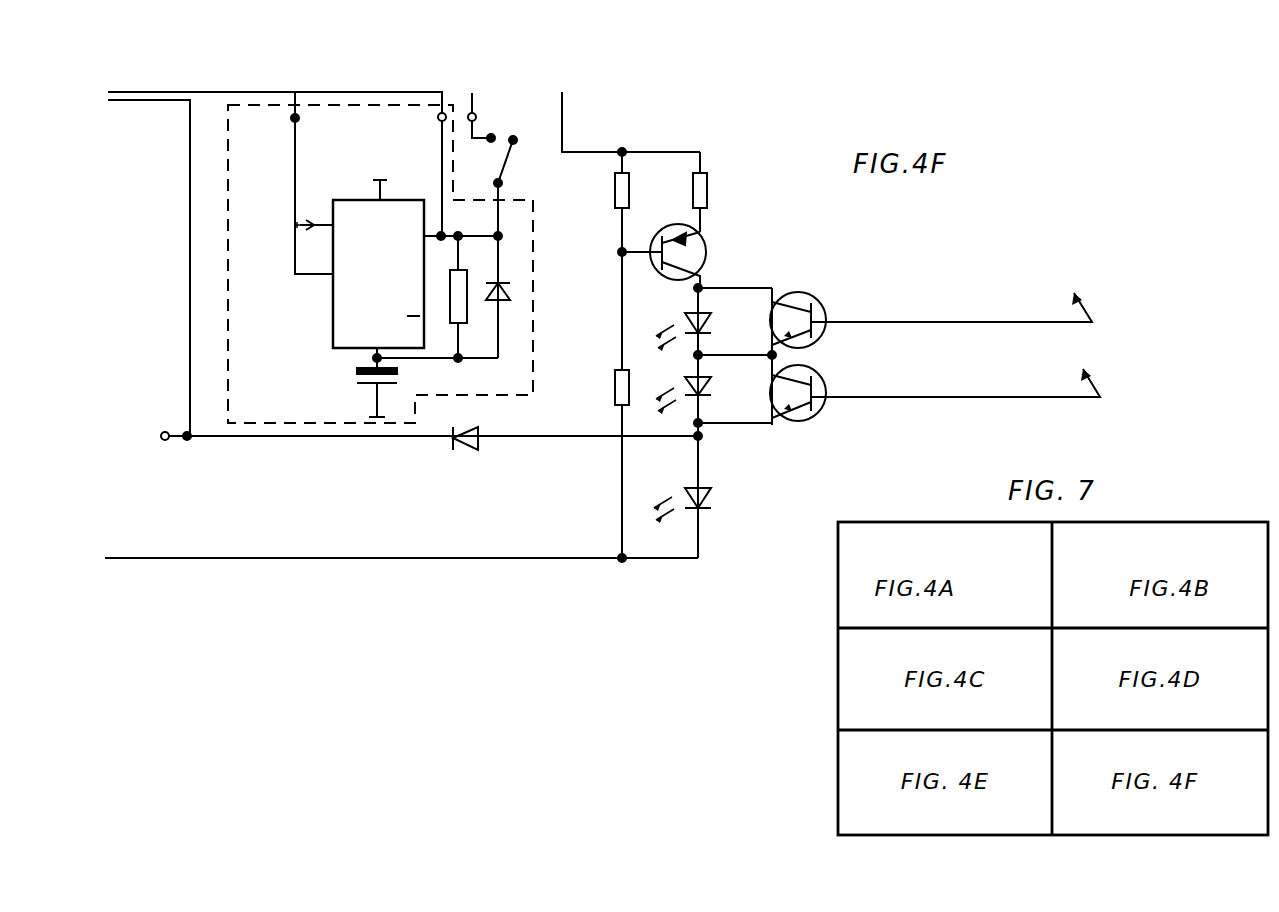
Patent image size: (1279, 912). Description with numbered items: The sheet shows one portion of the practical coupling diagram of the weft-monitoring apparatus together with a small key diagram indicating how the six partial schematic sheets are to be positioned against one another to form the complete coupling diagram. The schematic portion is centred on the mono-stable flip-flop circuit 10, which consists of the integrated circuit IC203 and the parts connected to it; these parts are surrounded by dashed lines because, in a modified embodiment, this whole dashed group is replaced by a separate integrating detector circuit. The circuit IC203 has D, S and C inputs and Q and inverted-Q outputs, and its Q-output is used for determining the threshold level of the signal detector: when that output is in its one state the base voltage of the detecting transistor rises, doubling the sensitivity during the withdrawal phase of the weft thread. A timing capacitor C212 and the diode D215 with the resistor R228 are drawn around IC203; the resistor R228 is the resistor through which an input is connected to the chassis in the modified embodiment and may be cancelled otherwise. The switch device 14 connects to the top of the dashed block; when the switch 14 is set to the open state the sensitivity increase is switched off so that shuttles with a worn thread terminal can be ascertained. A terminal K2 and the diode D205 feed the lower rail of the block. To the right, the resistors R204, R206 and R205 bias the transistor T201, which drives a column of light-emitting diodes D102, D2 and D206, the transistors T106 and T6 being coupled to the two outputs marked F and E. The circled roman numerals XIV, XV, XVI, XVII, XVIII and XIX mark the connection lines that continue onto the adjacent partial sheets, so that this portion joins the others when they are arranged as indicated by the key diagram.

The mono-stable flip-flop circuit 10 is at (388, 82).
The switch device 14 is at (504, 168).
The connection line XIV is at (155, 92).
The connection line XV is at (153, 100).
The connection line XVI is at (295, 93).
The connection line XVII is at (472, 93).
The connection line XVIII is at (563, 97).
The connection line XIX is at (217, 557).
The circuit IC203 is at (398, 244).
The resistor R228 is at (467, 299).
The diode 1N4148 D215 is at (529, 297).
The capacitor 1.5 uF C212 is at (348, 389).
The terminal K2 is at (415, 437).
The diode 1N4148 D205 is at (472, 438).
The resistor 4.7k R204 is at (626, 261).
The resistor 100k R206 is at (733, 192).
The resistor 33k R205 is at (597, 464).
The transistor BC308 T201 is at (698, 256).
The light emitting diode D102 is at (714, 321).
The light emitting diode D2 is at (714, 395).
The transistor BC238B T106 is at (938, 356).
The transistor BC238B T6 is at (942, 392).
The light emitting diode LSM-3L D206 is at (709, 497).